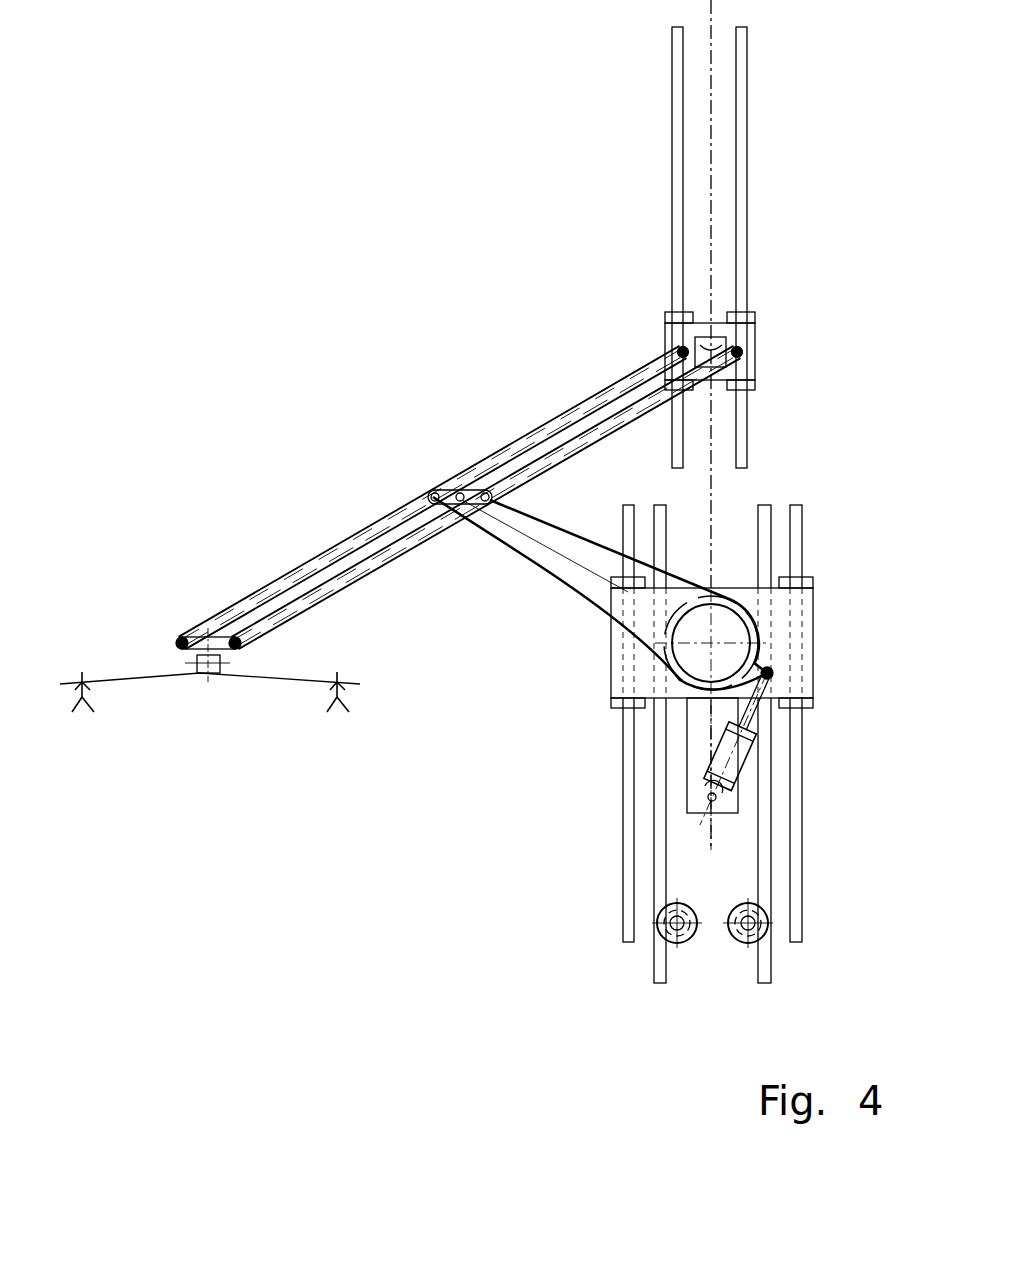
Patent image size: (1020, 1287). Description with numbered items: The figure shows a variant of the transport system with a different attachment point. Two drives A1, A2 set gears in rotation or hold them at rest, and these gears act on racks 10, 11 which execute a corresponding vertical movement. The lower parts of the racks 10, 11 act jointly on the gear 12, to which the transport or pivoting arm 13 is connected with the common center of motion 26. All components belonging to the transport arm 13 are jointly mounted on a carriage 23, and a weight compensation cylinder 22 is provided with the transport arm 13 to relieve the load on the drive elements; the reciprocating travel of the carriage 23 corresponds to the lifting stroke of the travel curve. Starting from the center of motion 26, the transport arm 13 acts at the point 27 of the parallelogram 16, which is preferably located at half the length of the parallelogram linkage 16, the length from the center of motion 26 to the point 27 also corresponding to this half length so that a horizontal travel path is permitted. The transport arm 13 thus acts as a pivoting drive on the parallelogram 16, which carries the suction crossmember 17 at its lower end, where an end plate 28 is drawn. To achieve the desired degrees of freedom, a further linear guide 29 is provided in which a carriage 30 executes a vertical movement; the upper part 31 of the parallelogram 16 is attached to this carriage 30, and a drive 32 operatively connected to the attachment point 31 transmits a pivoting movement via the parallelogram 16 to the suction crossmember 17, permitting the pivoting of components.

The rack 10 is at (660, 848).
The rack 11 is at (763, 848).
The gear 12 is at (717, 597).
The transport arm 13 is at (560, 586).
The parallelogram 16 is at (260, 612).
The suction crossmember 17 is at (205, 677).
The weight compensation cylinder 22 is at (717, 750).
The carriage 23 is at (616, 648).
The center of motion 26 is at (705, 640).
The point 27 is at (440, 490).
The end plate 28 is at (260, 637).
The linear guide 29 is at (657, 247).
The carriage 30 is at (755, 358).
The upper part 31 is at (732, 347).
The drive 32 is at (697, 338).
The drive A1 is at (668, 935).
The drive A2 is at (760, 937).